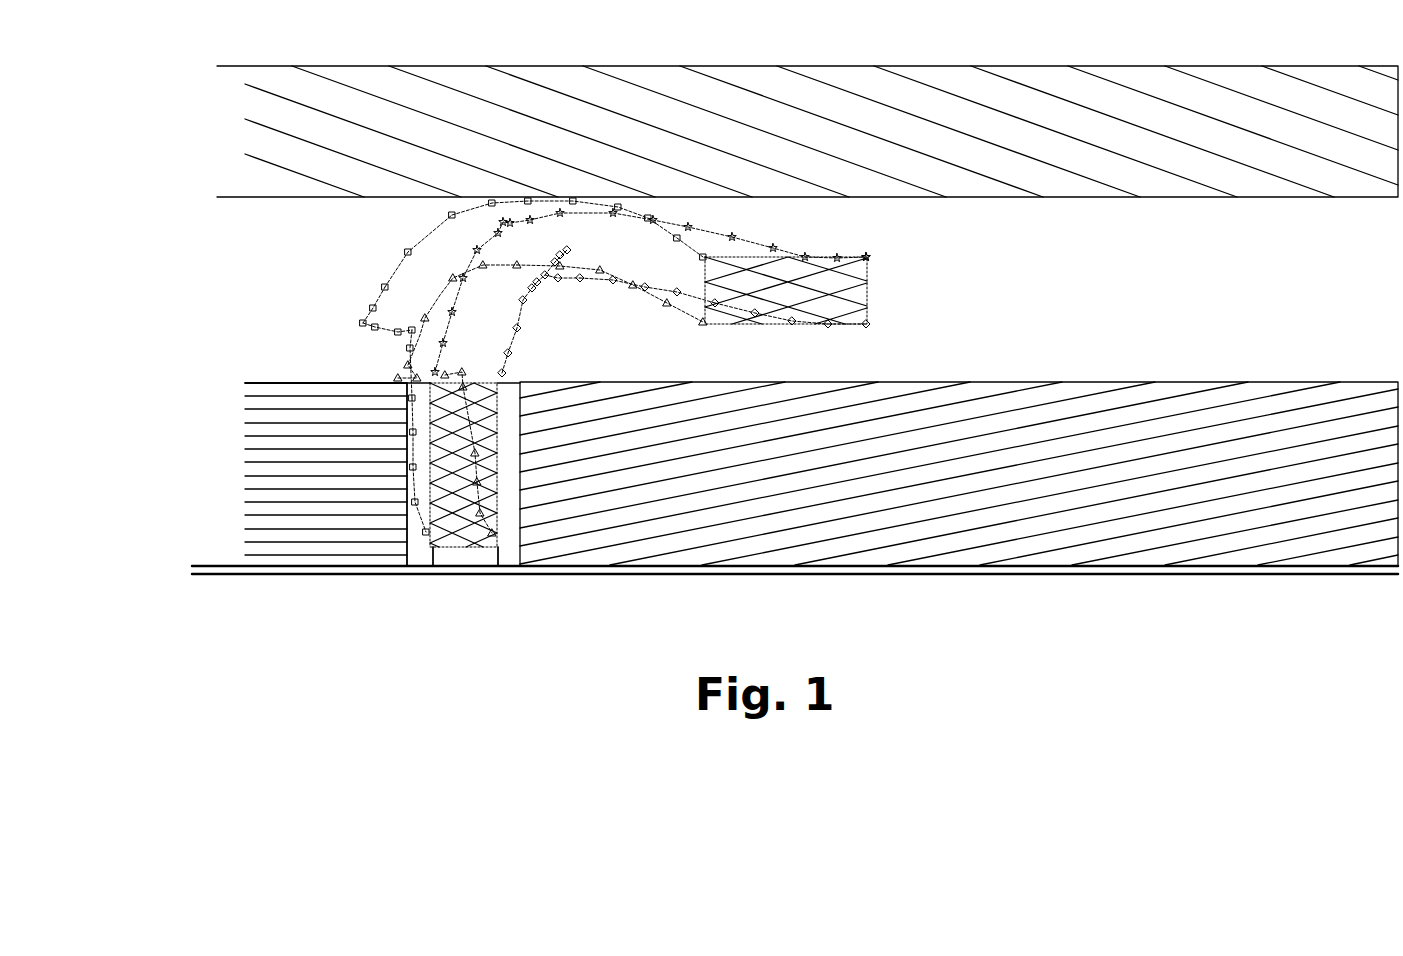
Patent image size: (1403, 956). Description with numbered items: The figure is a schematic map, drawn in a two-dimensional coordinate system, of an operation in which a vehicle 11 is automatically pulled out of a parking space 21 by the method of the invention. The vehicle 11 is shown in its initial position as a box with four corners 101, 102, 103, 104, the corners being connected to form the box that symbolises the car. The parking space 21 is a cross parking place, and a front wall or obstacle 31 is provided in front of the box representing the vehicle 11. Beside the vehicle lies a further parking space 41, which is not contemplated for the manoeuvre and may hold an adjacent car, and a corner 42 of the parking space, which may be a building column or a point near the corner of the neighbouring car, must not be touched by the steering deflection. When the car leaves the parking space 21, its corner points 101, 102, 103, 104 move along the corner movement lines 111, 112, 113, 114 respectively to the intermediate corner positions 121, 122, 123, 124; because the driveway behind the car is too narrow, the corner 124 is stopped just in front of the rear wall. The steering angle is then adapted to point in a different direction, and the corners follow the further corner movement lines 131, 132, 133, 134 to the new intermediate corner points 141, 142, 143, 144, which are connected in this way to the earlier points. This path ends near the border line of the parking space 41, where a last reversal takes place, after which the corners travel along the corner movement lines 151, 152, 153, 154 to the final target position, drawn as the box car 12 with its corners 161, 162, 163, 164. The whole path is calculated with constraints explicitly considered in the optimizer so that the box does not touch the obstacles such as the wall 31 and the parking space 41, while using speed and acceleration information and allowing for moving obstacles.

The vehicle 11 is at (457, 532).
The vehicle, target position 12 is at (862, 285).
The parking space 21 is at (418, 548).
The front wall/obstacle 31 is at (197, 577).
The not contemplated parking space 41 is at (270, 533).
The corner of parking space 42 is at (577, 410).
The car corner, initial position 101 is at (433, 570).
The car corner, initial position 102 is at (498, 566).
The car corner, initial position 103 is at (502, 383).
The car corner, initial position 104 is at (407, 386).
The corner movement line 111 is at (405, 373).
The corner movement line 112 is at (480, 503).
The corner movement line 113 is at (515, 308).
The corner movement line 114 is at (455, 305).
The car corner, intermediate position 121 is at (408, 343).
The car corner, intermediate position 122 is at (458, 372).
The car corner, intermediate position 123 is at (565, 250).
The car corner, intermediate position 124 is at (503, 220).
The corner movement line 131 is at (385, 322).
The corner movement line 132 is at (432, 375).
The corner movement line 133 is at (548, 270).
The corner movement line 134 is at (515, 215).
The car corner, intermediate position 141 is at (362, 322).
The car corner, intermediate position 142 is at (393, 377).
The car corner, intermediate position 143 is at (543, 283).
The car corner, intermediate position 144 is at (487, 230).
The corner movement line 151 is at (383, 278).
The corner movement line 152 is at (663, 273).
The corner movement line 153 is at (683, 293).
The corner movement line 154 is at (758, 238).
The car corner, final position 161 is at (705, 322).
The car corner, final position 162 is at (703, 255).
The car corner, final position 163 is at (867, 320).
The car corner, final position 164 is at (867, 257).